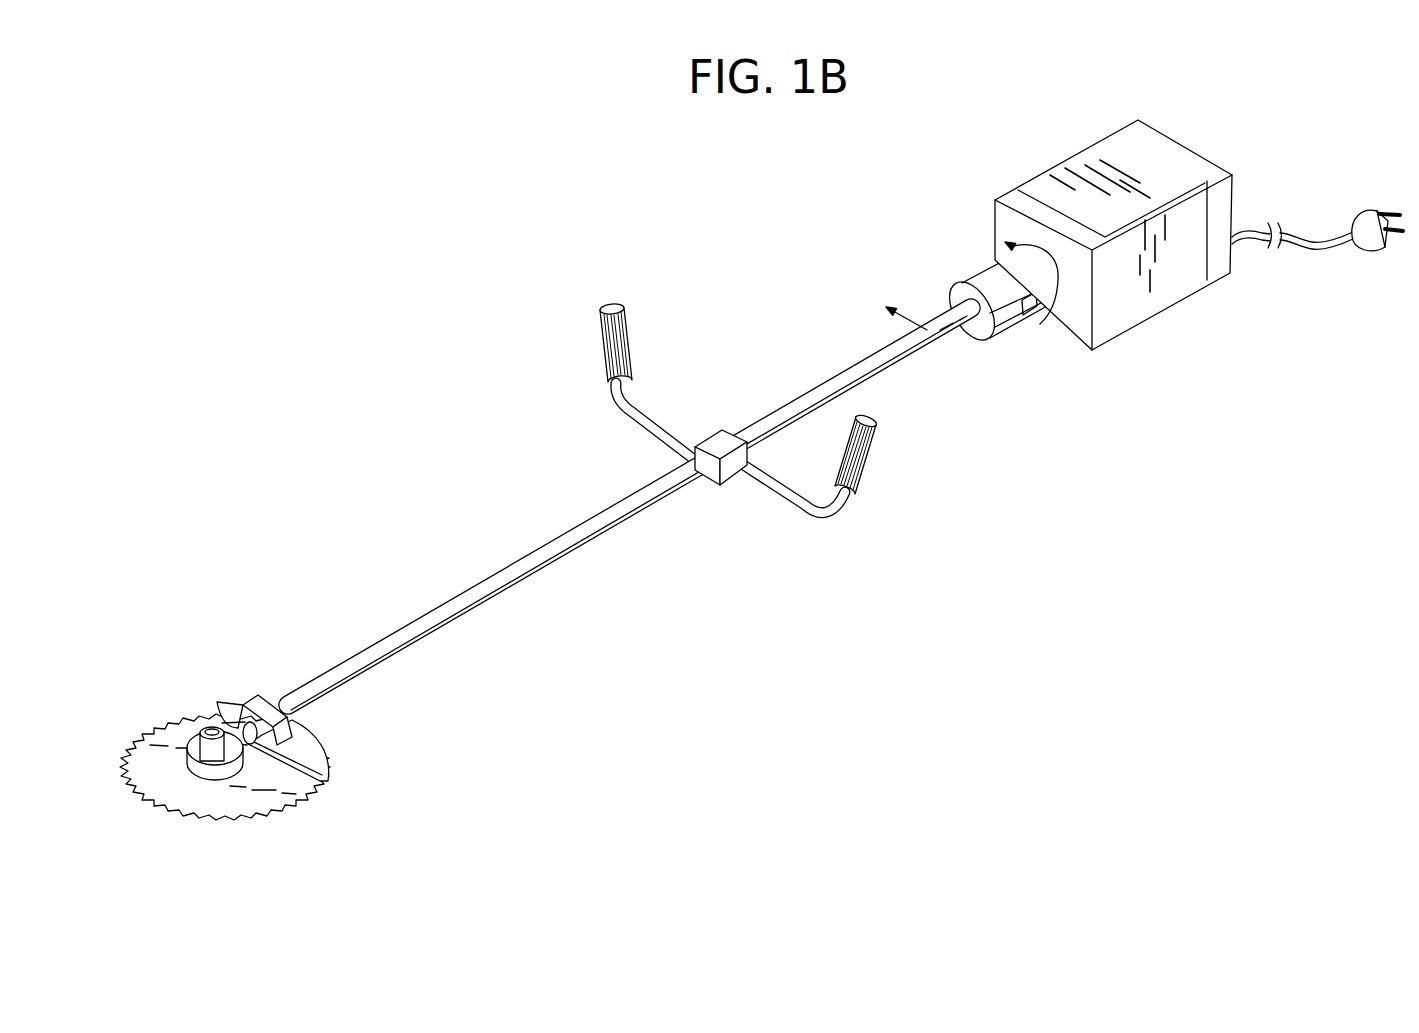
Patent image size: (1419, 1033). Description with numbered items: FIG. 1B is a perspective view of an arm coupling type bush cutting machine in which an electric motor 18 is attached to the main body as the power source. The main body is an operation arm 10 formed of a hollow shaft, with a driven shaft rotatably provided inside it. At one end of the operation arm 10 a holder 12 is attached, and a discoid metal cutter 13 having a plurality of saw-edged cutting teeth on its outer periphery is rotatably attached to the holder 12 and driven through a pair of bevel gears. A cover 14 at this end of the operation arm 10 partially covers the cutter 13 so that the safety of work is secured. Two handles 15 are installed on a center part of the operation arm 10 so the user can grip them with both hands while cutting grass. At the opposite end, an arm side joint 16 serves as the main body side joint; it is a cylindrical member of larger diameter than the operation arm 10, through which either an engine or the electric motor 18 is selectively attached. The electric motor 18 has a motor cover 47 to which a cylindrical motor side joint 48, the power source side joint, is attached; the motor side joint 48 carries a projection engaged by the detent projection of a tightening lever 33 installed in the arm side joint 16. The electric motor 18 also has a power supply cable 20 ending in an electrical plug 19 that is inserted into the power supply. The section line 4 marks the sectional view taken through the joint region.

The operation arm 10 is at (488, 576).
The holder 12 is at (211, 728).
The metal cutter 13 is at (246, 797).
The cover 14 is at (312, 745).
The handles 15 is at (602, 337).
The arm side joint 16 is at (1003, 327).
The electric motor 18 is at (1110, 152).
The electrical plug 19 is at (1367, 240).
The power supply cable 20 is at (1253, 240).
The tightening lever 33 is at (1040, 308).
The motor cover 47 is at (1188, 208).
The motor side joint 48 is at (1066, 282).
The section line 4- 4 is at (959, 269).